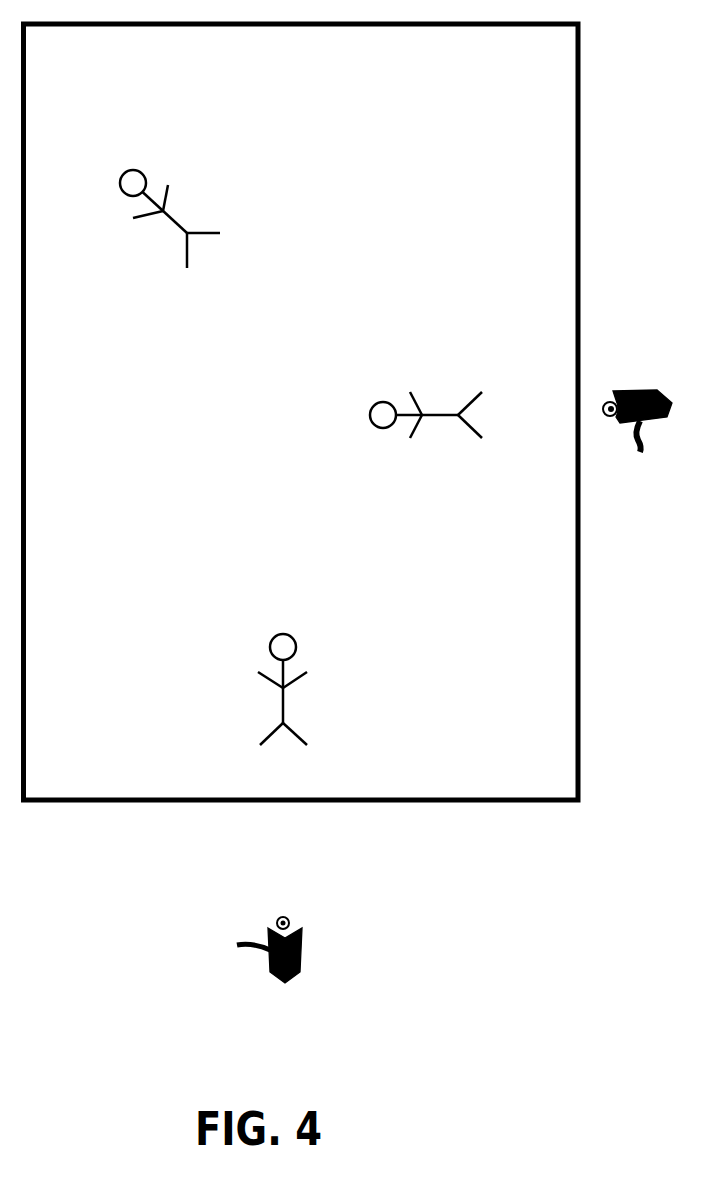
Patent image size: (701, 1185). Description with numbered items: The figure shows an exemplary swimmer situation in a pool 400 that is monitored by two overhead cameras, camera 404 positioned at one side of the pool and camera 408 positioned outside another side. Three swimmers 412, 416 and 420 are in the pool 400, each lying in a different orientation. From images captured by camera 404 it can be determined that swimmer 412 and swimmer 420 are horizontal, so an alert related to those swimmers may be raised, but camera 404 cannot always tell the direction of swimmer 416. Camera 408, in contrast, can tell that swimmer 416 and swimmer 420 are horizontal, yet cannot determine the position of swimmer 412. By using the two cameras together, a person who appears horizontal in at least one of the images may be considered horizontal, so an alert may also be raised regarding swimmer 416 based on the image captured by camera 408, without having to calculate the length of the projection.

The pool 400 is at (580, 107).
The camera 404 is at (623, 385).
The camera 408 is at (305, 937).
The swimmer 412 is at (303, 645).
The swimmer 416 is at (440, 404).
The swimmer 420 is at (176, 217).